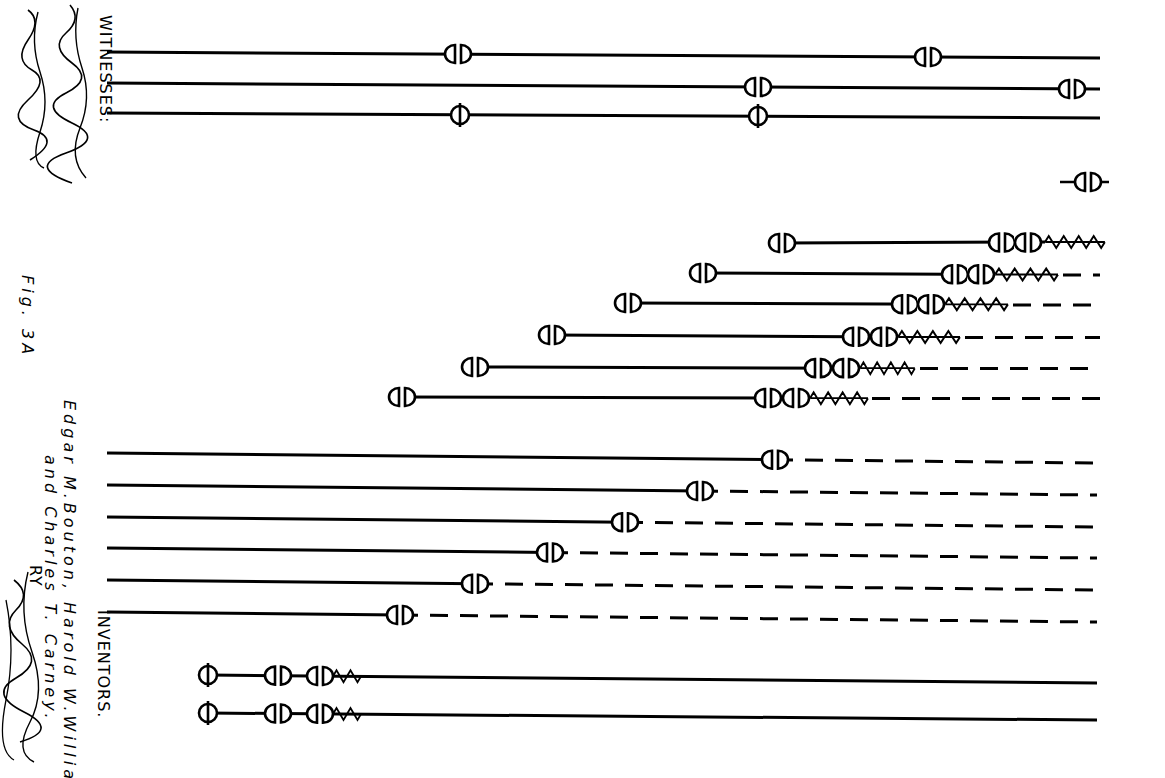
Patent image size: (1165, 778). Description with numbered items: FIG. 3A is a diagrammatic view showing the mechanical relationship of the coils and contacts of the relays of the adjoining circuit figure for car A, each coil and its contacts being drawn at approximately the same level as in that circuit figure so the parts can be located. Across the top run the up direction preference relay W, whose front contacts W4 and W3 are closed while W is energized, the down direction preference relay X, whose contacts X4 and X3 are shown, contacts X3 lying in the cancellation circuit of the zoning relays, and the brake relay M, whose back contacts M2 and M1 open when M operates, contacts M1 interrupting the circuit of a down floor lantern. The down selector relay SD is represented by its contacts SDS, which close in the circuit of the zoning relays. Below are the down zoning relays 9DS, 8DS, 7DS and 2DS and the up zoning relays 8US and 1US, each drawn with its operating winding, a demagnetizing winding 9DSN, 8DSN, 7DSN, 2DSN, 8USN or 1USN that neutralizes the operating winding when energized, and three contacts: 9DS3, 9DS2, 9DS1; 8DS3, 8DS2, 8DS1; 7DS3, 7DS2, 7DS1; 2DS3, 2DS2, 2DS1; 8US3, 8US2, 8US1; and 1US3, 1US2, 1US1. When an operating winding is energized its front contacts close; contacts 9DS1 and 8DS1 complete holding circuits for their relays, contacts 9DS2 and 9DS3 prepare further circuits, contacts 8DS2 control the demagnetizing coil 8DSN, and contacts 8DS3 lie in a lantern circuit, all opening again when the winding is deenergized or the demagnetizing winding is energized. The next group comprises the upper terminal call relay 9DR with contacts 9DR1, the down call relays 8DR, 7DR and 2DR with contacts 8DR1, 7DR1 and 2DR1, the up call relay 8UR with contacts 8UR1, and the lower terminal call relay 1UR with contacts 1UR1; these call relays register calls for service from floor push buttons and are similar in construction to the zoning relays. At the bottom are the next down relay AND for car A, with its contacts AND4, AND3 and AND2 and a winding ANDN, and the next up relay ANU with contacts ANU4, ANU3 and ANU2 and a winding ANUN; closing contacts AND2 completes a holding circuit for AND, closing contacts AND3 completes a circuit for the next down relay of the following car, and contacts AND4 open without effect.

The up direction preference relay W is at (619, 57).
The down direction preference relay X is at (617, 90).
The brake relay M is at (618, 119).
The front contacts of up direction preference relay W4 is at (470, 48).
The front contacts of up direction preference relay W3 is at (940, 50).
The contacts of down direction preference relay X4 is at (770, 82).
The contacts of down direction preference relay X3 is at (1060, 85).
The back contacts of brake relay M2 is at (469, 110).
The back contacts of brake relay M1 is at (767, 111).
The down selector relay SD is at (1101, 181).
The contacts of down selector relay SDS is at (1055, 182).
The down zoning relay 9DS is at (1083, 248).
The contacts of down zoning relay 9DS3 is at (767, 243).
The contacts of down zoning relay 9DS2 is at (988, 237).
The holding contacts of down zoning relay 9DS1 is at (1017, 235).
The demagnetizing winding of down zoning relay 9DSN is at (1079, 232).
The down zoning relay 8DS is at (1048, 294).
The contacts of down zoning relay 8DS3 is at (691, 273).
The contacts of down zoning relay 8DS2 is at (946, 272).
The holding contacts of down zoning relay 8DS1 is at (971, 265).
The demagnetizing winding 8DSN is at (1025, 267).
The down zoning relay 7DS is at (1000, 326).
The contacts of down zoning relay 7DS3 is at (617, 303).
The contacts of down zoning relay 7DS2 is at (896, 300).
The holding contacts of down zoning relay 7DS1 is at (927, 297).
The demagnetizing winding of down zoning relay 7DSN is at (987, 296).
The down zoning relay 2DS is at (946, 357).
The contacts of down zoning relay 2DS3 is at (536, 335).
The contacts of down zoning relay 2DS2 is at (853, 332).
The holding contacts of down zoning relay 2DS1 is at (897, 330).
The demagnetizing winding of down zoning relay 2DSN is at (943, 327).
The up zoning relay 8US is at (912, 372).
The contacts of up zoning relay 8US3 is at (444, 367).
The contacts of up zoning relay 8US2 is at (806, 364).
The holding contacts of up zoning relay 8US1 is at (837, 361).
The demagnetizing winding of up zoning relay 8USN is at (901, 360).
The up zoning relay 1US is at (849, 408).
The contacts of up zoning relay 1US3 is at (375, 397).
The contacts of up zoning relay 1US2 is at (757, 396).
The holding contacts of up zoning relay 1US1 is at (809, 392).
The demagnetizing winding of up zoning relay 1USN is at (822, 408).
The upper terminal call relay 9DR is at (630, 464).
The contacts of upper terminal call relay 9DR1 is at (788, 452).
The down call relay 8DR is at (630, 496).
The contacts of down call relay 8DR1 is at (713, 485).
The down call relay 7DR is at (630, 527).
The contacts of down call relay 7DR1 is at (638, 516).
The down call relay 2DR is at (630, 558).
The contacts of down call relay 2DR1 is at (563, 547).
The up call relay 8UR is at (629, 590).
The contacts of up call relay 8UR1 is at (496, 573).
The lower terminal call relay 1UR is at (629, 622).
The contacts of lower terminal call relay 1UR1 is at (421, 604).
The next down relay car A AND is at (361, 673).
The contacts of next down relay AND4 is at (199, 681).
The contacts of next down relay AND3 is at (289, 669).
The holding contacts of next down relay AND2 is at (340, 667).
The winding of relay AND ANDN is at (347, 676).
The next up relay car A ANU is at (360, 714).
The contacts of next up relay ANU4 is at (198, 717).
The contacts of next up relay ANU3 is at (274, 711).
The contacts of next up relay ANU2 is at (320, 700).
The winding of relay ANU ANUN is at (347, 714).